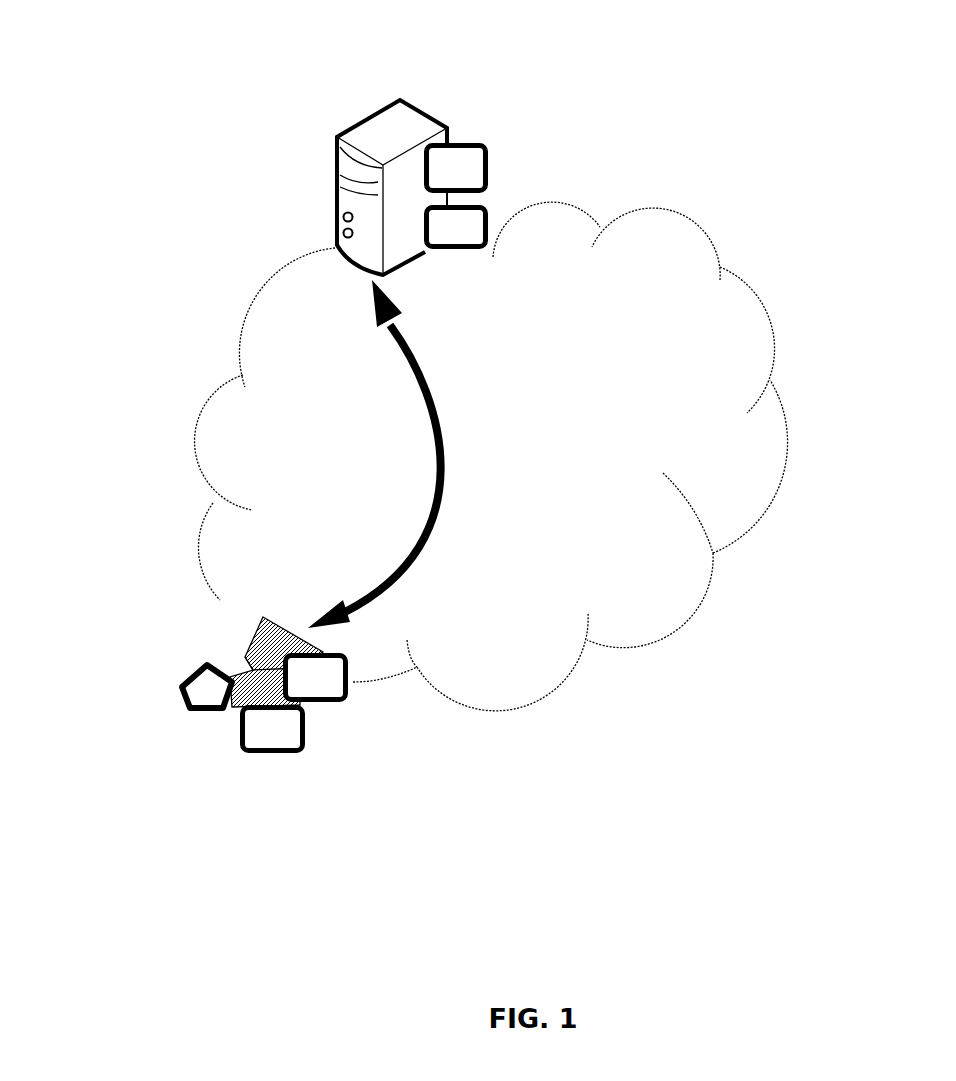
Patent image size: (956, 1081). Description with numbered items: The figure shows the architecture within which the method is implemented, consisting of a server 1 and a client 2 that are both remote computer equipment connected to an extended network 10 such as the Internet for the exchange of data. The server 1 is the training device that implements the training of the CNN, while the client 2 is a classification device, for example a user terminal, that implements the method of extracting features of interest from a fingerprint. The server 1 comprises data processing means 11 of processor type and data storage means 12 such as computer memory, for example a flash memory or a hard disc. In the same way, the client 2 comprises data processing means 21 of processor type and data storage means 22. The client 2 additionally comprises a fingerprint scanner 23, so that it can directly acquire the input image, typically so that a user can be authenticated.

The server 1 is at (479, 170).
The extended network 10 is at (250, 270).
The data processing means 11 is at (492, 233).
The data storage means 12 is at (493, 157).
The client 2 is at (273, 726).
The data processing means 21 is at (355, 707).
The data storage means 22 is at (303, 753).
The fingerprint scanner 23 is at (183, 708).